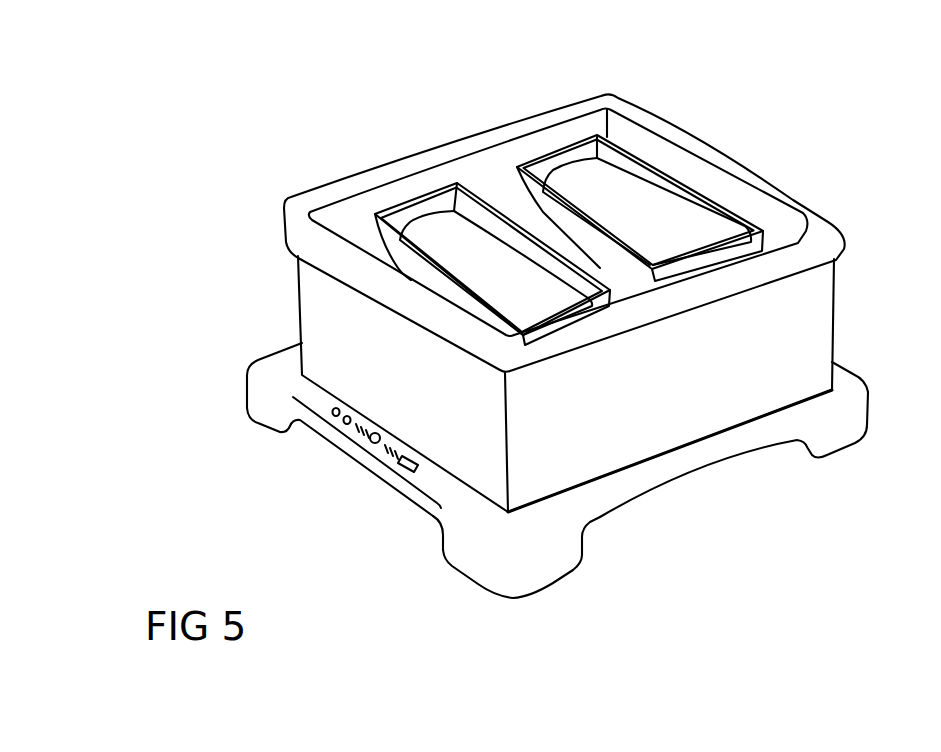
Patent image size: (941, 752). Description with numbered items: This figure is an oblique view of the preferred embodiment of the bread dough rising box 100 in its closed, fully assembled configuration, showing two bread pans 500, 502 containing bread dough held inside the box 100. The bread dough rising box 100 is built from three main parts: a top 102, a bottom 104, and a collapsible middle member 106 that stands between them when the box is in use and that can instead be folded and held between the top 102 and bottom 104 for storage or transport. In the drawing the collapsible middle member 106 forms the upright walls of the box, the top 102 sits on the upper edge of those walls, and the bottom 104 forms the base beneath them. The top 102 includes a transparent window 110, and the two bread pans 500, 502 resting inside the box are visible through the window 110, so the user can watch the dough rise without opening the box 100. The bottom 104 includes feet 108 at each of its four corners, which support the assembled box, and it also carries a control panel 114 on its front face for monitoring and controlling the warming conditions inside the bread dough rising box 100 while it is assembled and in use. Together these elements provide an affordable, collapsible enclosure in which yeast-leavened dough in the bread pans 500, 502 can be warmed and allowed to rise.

The bread dough rising box 100 is at (866, 123).
The top 102 is at (537, 113).
The bottom 104 is at (688, 474).
The collapsible middle member 106 is at (297, 296).
The feet 108 is at (550, 583).
The transparent window 110 is at (348, 204).
The control panel 114 is at (362, 460).
The bread pan 500 is at (447, 170).
The bread pan 502 is at (670, 162).